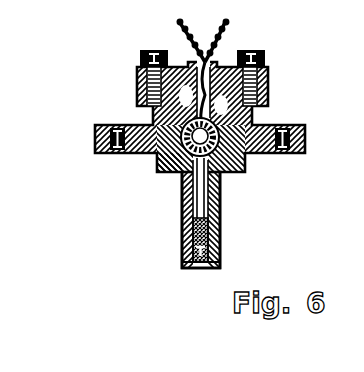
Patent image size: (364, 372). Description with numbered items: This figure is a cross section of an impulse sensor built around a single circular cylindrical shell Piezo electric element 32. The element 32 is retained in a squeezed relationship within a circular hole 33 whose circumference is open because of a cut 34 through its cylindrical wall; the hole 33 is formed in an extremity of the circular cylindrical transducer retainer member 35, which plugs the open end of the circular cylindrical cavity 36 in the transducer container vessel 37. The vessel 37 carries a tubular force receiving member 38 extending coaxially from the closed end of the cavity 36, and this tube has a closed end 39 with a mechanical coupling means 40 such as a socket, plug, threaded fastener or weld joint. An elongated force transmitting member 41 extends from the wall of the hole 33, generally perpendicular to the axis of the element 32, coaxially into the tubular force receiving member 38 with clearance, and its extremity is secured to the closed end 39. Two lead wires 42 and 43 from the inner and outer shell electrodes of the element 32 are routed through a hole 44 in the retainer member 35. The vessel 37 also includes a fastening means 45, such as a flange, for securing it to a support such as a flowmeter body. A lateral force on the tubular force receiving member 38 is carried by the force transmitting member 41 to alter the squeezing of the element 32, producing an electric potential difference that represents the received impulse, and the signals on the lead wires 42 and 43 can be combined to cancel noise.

The circular cylindrical shell Piezo electric element 32 is at (175, 163).
The circular hole 33 is at (255, 158).
The cut 34 is at (265, 118).
The transducer retainer member 35 is at (258, 113).
The circular cylindrical cavity 36 is at (148, 113).
The transducer container vessel 37 is at (142, 156).
The tubular force receiving member 38 is at (219, 206).
The closed end 39 is at (182, 240).
The mechanical coupling means 40 is at (182, 265).
The elongated force transmitting member 41 is at (209, 190).
The lead wire 42 is at (177, 30).
The lead wire 43 is at (228, 22).
The hole 44 is at (190, 100).
The fastening means 45 is at (100, 156).